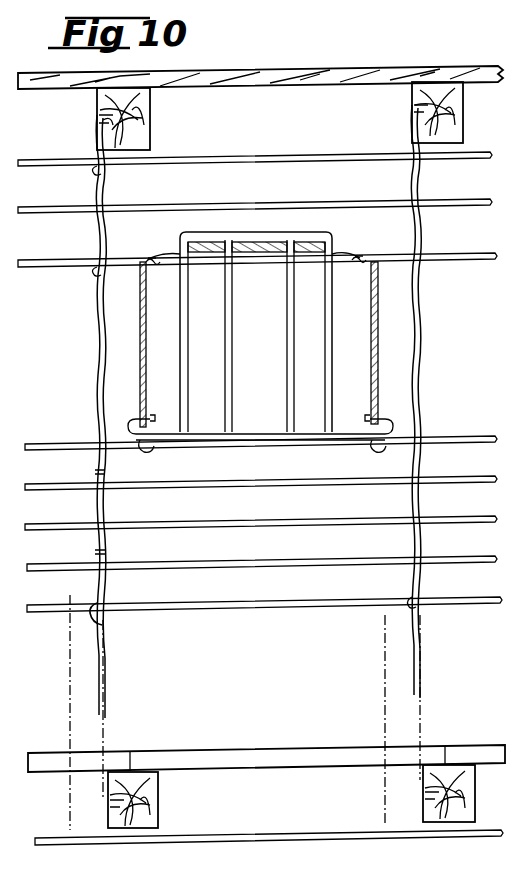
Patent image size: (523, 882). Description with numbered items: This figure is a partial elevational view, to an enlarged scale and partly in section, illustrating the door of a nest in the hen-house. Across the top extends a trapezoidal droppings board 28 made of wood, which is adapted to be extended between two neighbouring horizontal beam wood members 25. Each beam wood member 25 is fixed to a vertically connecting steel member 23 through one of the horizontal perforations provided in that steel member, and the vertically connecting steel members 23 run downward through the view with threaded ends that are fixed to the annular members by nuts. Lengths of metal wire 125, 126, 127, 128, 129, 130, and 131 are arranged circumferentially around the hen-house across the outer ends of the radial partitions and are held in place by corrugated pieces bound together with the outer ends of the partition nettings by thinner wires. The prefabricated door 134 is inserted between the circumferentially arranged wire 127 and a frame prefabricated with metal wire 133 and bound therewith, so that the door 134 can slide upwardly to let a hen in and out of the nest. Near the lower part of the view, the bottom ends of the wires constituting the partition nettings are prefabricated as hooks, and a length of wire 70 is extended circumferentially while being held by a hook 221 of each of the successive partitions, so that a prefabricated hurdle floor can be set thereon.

The trapezoidal droppings board 28 is at (289, 77).
The horizontal beam wood member 25 is at (149, 136).
The metal wire 125 is at (33, 160).
The metal wire 126 is at (31, 207).
The metal wire 127 is at (36, 268).
The metal wire 128 is at (32, 444).
The metal wire 129 is at (32, 484).
The metal wire 130 is at (34, 524).
The metal wire 131 is at (38, 566).
The wire 70 is at (36, 612).
The hook 221 is at (104, 622).
The vertically connecting steel member 23 is at (105, 700).
The prefabricated door 134 is at (315, 233).
The metal wire frame 133 is at (378, 296).